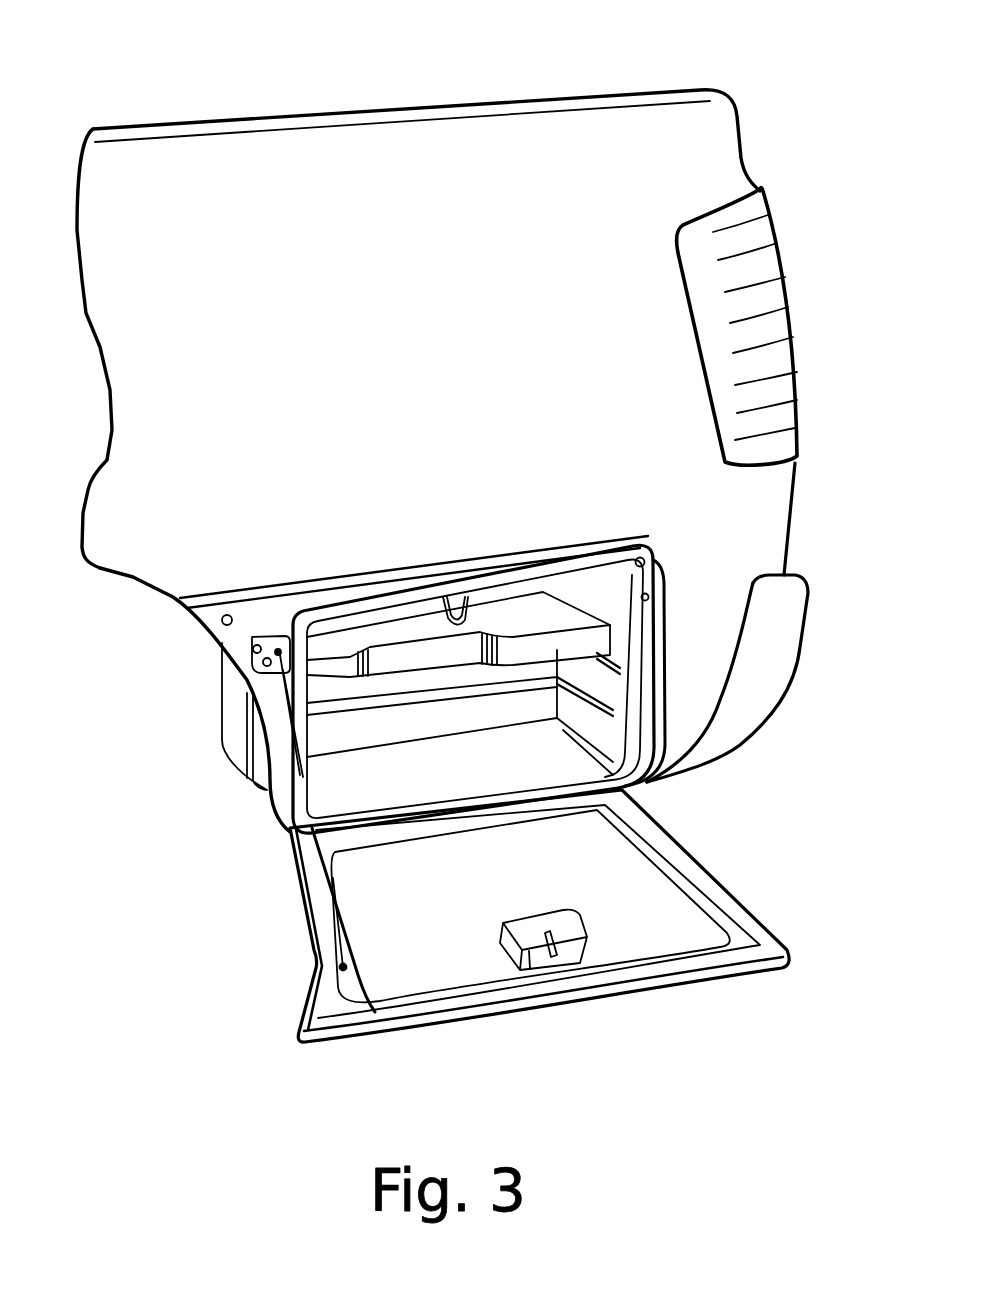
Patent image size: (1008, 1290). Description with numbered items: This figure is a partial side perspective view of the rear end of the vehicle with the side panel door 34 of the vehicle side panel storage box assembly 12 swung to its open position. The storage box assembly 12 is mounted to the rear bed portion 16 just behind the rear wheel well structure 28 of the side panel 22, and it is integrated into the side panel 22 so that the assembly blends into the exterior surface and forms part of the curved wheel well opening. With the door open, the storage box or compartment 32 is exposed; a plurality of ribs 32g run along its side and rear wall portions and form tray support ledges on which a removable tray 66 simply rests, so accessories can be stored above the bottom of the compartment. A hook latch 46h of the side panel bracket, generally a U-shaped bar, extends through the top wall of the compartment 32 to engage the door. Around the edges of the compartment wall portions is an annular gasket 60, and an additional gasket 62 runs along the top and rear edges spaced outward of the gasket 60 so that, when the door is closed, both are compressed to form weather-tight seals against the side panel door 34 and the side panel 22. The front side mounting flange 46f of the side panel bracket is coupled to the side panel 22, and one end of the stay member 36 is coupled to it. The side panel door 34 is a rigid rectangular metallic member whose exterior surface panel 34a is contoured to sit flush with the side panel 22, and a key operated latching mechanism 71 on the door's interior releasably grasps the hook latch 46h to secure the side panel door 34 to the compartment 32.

The vehicle side panel storage box assembly 12 is at (235, 796).
The rear bed portion 16 is at (200, 88).
The side panel 22 is at (193, 343).
The rear wheel well structure 28 is at (137, 583).
The compartment 32 is at (535, 769).
The ribs 32g is at (613, 711).
The side panel door 34 is at (710, 865).
The exterior surface panel 34a is at (678, 928).
The stay member 36 is at (335, 826).
The front side mounting flange 46f is at (233, 632).
The hook latch 46h is at (490, 600).
The annular gasket 60 is at (633, 588).
The additional gasket 62 is at (584, 543).
The tray 66 is at (325, 648).
The key operated latching mechanism 71 is at (575, 957).